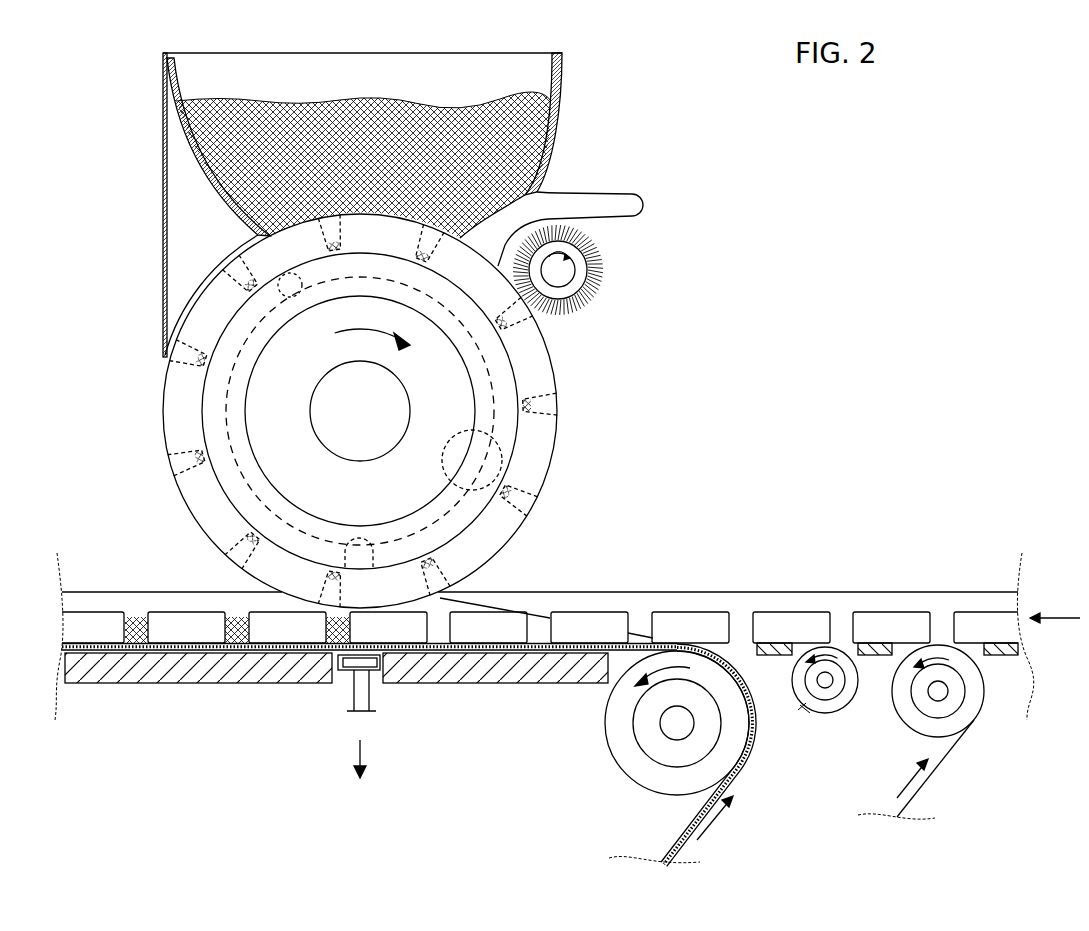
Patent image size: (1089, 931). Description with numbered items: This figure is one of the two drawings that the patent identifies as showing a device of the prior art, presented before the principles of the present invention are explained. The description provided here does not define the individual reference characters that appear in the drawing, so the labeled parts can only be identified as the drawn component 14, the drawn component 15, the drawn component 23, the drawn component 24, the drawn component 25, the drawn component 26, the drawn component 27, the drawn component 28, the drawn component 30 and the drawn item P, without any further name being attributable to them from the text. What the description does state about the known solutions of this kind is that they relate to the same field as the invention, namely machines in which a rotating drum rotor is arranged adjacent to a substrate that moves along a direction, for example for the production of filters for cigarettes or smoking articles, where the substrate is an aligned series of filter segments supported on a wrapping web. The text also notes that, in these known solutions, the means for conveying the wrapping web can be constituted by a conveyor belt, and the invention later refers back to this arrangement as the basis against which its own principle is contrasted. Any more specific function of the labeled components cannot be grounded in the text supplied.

The lidding film 14 is at (920, 797).
The conveyor belt 15 is at (683, 829).
The dosing drum 23 is at (540, 462).
The dosing chambers 24 is at (557, 408).
The powder hopper 25 is at (562, 73).
The plungers 26 is at (452, 498).
The drum outer sleeve 27 is at (217, 416).
The drum inner core 28 is at (505, 366).
The suction unit 30 is at (345, 683).
The blister web P is at (883, 628).